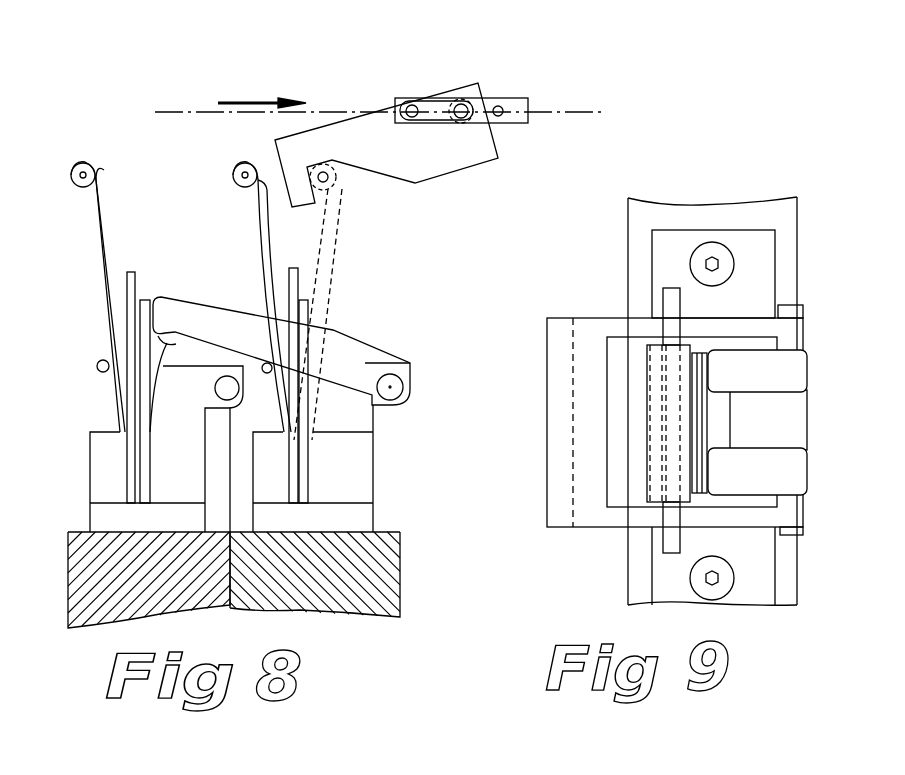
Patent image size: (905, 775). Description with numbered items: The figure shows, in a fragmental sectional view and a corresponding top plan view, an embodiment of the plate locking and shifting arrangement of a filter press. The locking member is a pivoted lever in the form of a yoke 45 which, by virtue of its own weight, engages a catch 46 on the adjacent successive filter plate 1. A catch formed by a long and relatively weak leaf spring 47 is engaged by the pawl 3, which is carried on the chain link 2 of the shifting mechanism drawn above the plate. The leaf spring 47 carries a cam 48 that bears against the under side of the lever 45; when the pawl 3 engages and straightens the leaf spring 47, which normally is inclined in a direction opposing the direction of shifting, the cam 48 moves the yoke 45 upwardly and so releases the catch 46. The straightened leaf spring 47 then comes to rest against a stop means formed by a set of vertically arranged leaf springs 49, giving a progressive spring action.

In FIG. 8, the filter plate 1 is at (68, 567).
In FIG. 9, the filter plate 1 is at (670, 213).
In FIG. 8, the chain link 2 is at (513, 86).
In FIG. 8, the pawl 3 is at (452, 167).
In FIG. 8, the yoke 45 is at (183, 303).
In FIG. 9, the yoke 45 is at (598, 318).
In FIG. 8, the catch 46 is at (179, 372).
In FIG. 9, the catch 46 is at (730, 420).
In FIG. 8, the leaf spring 47 is at (336, 180).
In FIG. 9, the leaf spring 47 is at (655, 427).
In FIG. 8, the cam 48 is at (97, 362).
In FIG. 9, the cam 48 is at (681, 538).
In FIG. 8, the leaf springs 49 is at (133, 272).
In FIG. 9, the leaf springs 49 is at (698, 472).